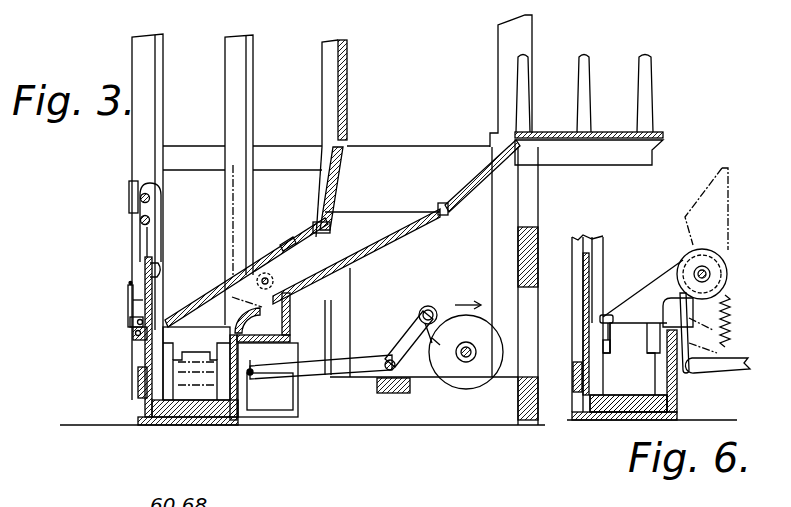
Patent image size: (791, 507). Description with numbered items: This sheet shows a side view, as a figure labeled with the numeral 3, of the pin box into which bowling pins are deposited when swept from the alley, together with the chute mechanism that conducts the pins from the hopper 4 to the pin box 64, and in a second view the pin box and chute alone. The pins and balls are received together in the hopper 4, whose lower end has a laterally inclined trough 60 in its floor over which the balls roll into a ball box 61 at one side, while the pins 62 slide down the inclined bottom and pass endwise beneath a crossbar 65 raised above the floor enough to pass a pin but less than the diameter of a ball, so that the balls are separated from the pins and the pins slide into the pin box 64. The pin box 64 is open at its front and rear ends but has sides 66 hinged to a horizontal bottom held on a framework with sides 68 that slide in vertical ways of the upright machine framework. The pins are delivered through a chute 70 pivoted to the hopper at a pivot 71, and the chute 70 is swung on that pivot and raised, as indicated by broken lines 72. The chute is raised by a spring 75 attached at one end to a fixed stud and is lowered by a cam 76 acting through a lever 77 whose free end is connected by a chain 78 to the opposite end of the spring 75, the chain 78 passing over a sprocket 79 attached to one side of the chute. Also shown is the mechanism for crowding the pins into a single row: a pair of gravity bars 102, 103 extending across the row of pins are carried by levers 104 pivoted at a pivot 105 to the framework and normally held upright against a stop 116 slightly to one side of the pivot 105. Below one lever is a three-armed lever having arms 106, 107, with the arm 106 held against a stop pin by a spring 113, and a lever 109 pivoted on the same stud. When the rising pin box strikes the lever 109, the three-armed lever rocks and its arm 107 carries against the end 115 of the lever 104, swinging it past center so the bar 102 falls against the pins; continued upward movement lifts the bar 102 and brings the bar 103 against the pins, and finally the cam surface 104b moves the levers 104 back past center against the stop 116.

In FIG. 3, the hopper plate 3 is at (614, 132).
In FIG. 3, the hopper 4 is at (416, 220).
In FIG. 3, the laterally inclined trough 60 is at (291, 325).
In FIG. 3, the ball box 61 is at (294, 408).
In FIG. 3, the pin 62 is at (527, 93).
In FIG. 3, the pin box 64 is at (140, 383).
In FIG. 6, the pin box 64 is at (617, 398).
In FIG. 3, the crossbar 65 is at (231, 281).
In FIG. 3, the sides 66 is at (196, 363).
In FIG. 6, the sides 66 is at (633, 355).
In FIG. 3, the sides of framework 68 is at (234, 319).
In FIG. 3, the chute 70 is at (192, 311).
In FIG. 6, the chute 70 is at (648, 290).
In FIG. 3, the pivot 71 is at (264, 256).
In FIG. 6, the pivot 71 is at (710, 274).
In FIG. 6, the broken lines 72 is at (729, 214).
In FIG. 6, the spring 75 is at (731, 315).
In FIG. 3, the cam 76 is at (469, 383).
In FIG. 3, the lever 77 is at (363, 365).
In FIG. 6, the lever 77 is at (710, 374).
In FIG. 6, the chain 78 is at (689, 352).
In FIG. 3, the sprocket 79 is at (286, 273).
In FIG. 6, the sprocket 79 is at (721, 259).
In FIG. 3, the gravity bar 102 is at (140, 198).
In FIG. 3, the gravity bar 103 is at (141, 222).
In FIG. 3, the lever 104 is at (146, 236).
In FIG. 3, the cam surface 104b is at (162, 208).
In FIG. 3, the pivot 105 is at (148, 270).
In FIG. 3, the arm 106 is at (133, 338).
In FIG. 3, the arm 107 is at (137, 319).
In FIG. 3, the lever 109 is at (147, 350).
In FIG. 3, the spring 113 is at (132, 300).
In FIG. 3, the end of lever 115 is at (128, 284).
In FIG. 3, the stop 116 is at (129, 210).